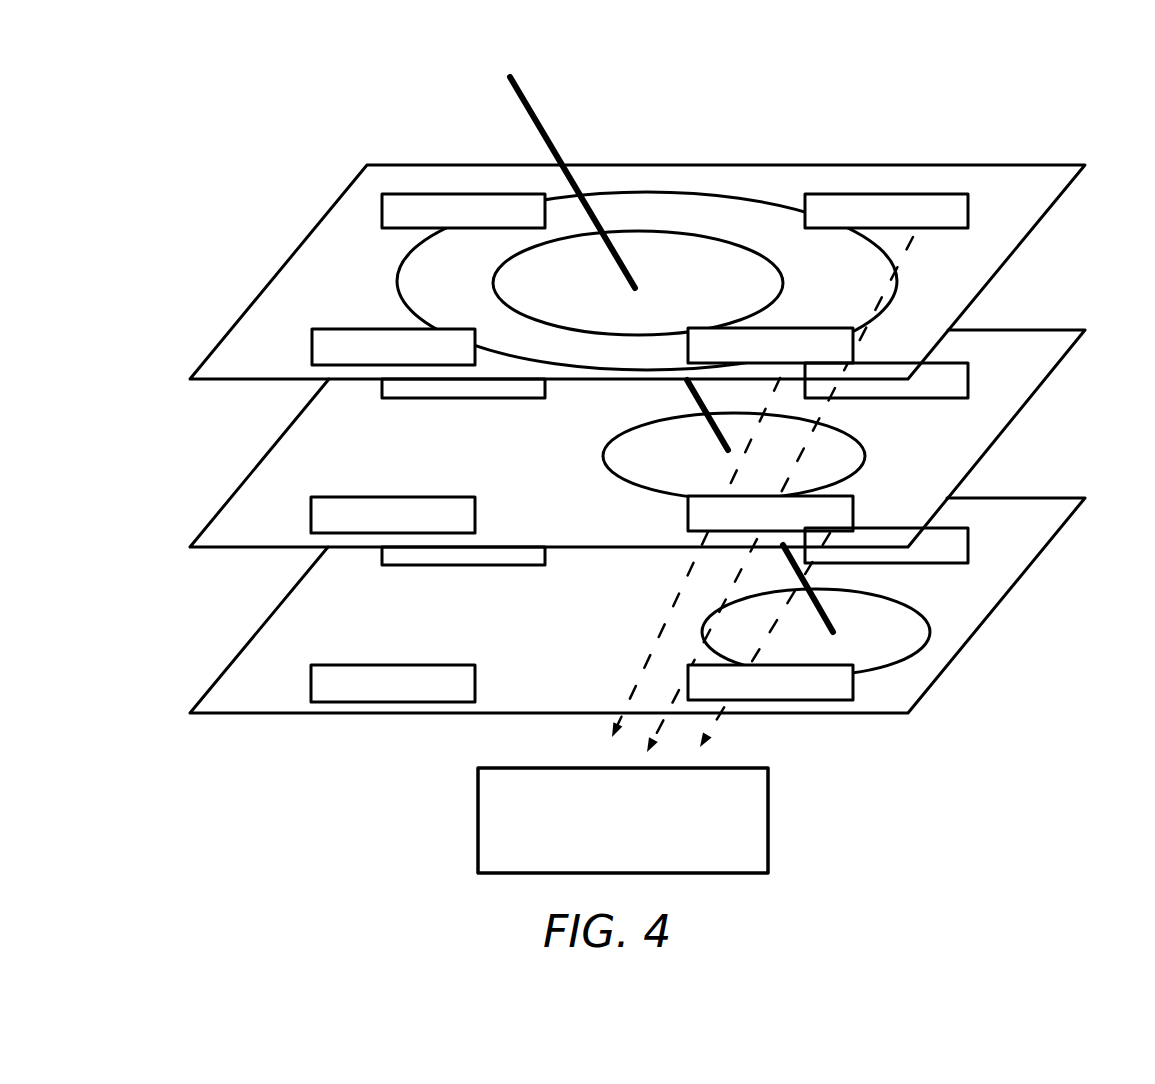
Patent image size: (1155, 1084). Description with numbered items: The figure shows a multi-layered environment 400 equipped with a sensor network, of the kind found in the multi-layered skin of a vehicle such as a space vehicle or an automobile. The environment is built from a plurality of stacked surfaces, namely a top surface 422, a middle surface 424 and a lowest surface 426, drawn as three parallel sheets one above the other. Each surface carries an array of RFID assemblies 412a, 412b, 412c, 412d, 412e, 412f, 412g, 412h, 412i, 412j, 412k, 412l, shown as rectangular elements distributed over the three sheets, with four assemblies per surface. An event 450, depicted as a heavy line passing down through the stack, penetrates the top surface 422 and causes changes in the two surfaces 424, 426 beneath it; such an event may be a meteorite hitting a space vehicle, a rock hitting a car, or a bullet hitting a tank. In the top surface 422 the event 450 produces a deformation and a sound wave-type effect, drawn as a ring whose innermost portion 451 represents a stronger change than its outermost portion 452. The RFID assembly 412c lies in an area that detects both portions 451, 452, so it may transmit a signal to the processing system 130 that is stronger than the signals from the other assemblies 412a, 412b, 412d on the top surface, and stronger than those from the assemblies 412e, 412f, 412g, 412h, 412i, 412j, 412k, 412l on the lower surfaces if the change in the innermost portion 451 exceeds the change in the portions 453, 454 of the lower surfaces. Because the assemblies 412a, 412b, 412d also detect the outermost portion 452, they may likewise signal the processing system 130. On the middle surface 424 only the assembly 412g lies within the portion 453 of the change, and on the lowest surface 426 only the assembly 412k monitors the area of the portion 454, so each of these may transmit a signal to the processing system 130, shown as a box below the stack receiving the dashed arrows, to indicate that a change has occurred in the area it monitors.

The multi-layered environment 400 is at (663, 382).
The top surface 422 is at (1040, 218).
The middle surface 424 is at (1032, 400).
The lowest surface 426 is at (1020, 582).
The event 450 is at (538, 120).
The innermost portion of the change 451 is at (493, 287).
The outermost portion of the change 452 is at (908, 247).
The portion of the change in the middle surface 453 is at (860, 476).
The portion of the change in the lowest surface 454 is at (920, 655).
The RFID assembly 412a is at (423, 194).
The RFID assembly 412b is at (935, 194).
The RFID assembly 412c is at (840, 328).
The RFID assembly 412d is at (360, 329).
The RFID assembly 412e is at (495, 399).
The RFID assembly 412f is at (917, 399).
The RFID assembly 412g is at (688, 514).
The RFID assembly 412h is at (355, 497).
The RFID assembly 412i is at (492, 566).
The RFID assembly 412j is at (940, 564).
The RFID assembly 412k is at (825, 700).
The RFID assembly 412l is at (372, 665).
The processing system 130 is at (770, 808).